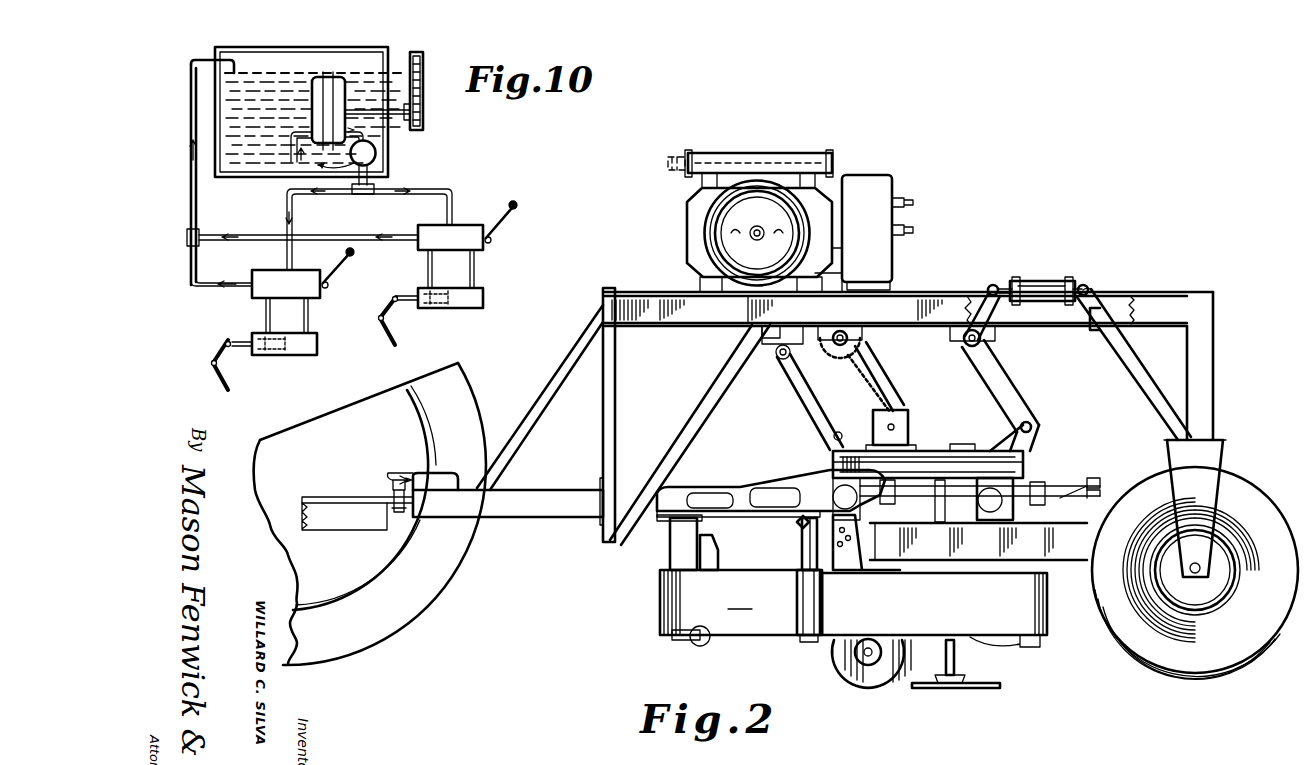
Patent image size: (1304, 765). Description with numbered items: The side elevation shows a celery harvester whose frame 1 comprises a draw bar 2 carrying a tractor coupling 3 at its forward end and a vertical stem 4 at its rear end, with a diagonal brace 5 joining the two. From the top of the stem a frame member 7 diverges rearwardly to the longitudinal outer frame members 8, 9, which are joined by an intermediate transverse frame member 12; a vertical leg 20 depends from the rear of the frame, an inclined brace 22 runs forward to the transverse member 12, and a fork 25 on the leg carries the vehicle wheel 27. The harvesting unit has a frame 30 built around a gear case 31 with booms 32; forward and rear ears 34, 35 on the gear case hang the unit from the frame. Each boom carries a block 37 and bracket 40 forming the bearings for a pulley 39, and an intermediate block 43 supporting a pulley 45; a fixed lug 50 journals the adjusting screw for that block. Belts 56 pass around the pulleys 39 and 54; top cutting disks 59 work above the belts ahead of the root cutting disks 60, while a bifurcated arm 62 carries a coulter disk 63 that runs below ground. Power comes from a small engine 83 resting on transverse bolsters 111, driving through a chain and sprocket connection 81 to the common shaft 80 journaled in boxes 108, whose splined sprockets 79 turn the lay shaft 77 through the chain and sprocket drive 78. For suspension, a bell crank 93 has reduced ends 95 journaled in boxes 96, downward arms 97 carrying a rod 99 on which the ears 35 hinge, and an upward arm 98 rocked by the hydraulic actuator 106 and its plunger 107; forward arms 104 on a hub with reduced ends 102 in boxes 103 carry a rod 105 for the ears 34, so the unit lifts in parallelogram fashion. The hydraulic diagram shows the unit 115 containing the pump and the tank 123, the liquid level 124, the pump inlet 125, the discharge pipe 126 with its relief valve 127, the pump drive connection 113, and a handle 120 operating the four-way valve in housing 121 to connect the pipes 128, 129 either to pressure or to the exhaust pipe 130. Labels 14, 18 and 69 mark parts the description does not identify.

In FIG. 2, the frame 1 is at (612, 288).
In FIG. 2, the draw bar 2 is at (542, 487).
In FIG. 2, the tractor coupling 3 is at (440, 477).
In FIG. 2, the vertical stem 4 is at (615, 418).
In FIG. 2, the diagonal brace 5 is at (535, 397).
In FIG. 2, the divergent frame member 7 is at (676, 323).
In FIG. 2, the outer frame member 8 is at (1106, 297).
In FIG. 2, the outer frame member 9 is at (916, 300).
In FIG. 2, the intermediate transverse frame member 12 is at (1088, 318).
In FIG. 2, the frame member 14 is at (1120, 300).
In FIG. 2, the diagonal brace 18 is at (690, 428).
In FIG. 2, the vertical leg 20 is at (1213, 392).
In FIG. 2, the inclined brace 22 is at (1135, 380).
In FIG. 2, the fork 25 is at (1213, 456).
In FIG. 2, the vehicle wheel 27 is at (1255, 490).
In FIG. 2, the frame of harvesting unit 30 is at (830, 462).
In FIG. 2, the gear case 31 is at (976, 450).
In FIG. 2, the boom 32 is at (752, 480).
In FIG. 2, the forward ears 34 is at (838, 448).
In FIG. 2, the rear ears 35 is at (1030, 438).
In FIG. 2, the block 37 is at (678, 548).
In FIG. 2, the pulley 39 is at (668, 564).
In FIG. 2, the bracket 40 is at (712, 550).
In FIG. 2, the block 43 is at (802, 548).
In FIG. 2, the pulley 45 is at (800, 632).
In FIG. 2, the fixed lug 50 is at (797, 524).
In FIG. 2, the pulley 54 is at (1041, 645).
In FIG. 2, the belt 56 is at (873, 579).
In FIG. 2, the top cutting disk 59 is at (868, 560).
In FIG. 2, the root cutting disk 60 is at (985, 688).
In FIG. 2, the bifurcated arm 62 is at (869, 640).
In FIG. 2, the coulter disk 63 is at (835, 656).
In FIG. 2, the post 69 is at (955, 660).
In FIG. 2, the lay shaft 77 is at (895, 427).
In FIG. 2, the chain and sprocket drive 78 is at (878, 374).
In FIG. 2, the sprocket 79 is at (833, 358).
In FIG. 2, the common drive shaft 80 is at (840, 330).
In FIG. 2, the chain and sprocket connection 81 is at (820, 348).
In FIG. 2, the small engine 83 is at (696, 210).
In FIG. 2, the bell crank 93 is at (962, 342).
In FIG. 10, the reduced ends 95 is at (210, 362).
In FIG. 2, the reduced ends 95 is at (970, 348).
In FIG. 2, the boxes 96 is at (990, 333).
In FIG. 10, the downward arms 97 is at (222, 382).
In FIG. 2, the downward arms 97 is at (995, 378).
In FIG. 10, the upward arm 98 is at (226, 342).
In FIG. 2, the upward arm 98 is at (988, 290).
In FIG. 2, the rod 99 is at (1032, 422).
In FIG. 2, the reduced ends 102 is at (780, 358).
In FIG. 2, the boxes 103 is at (768, 345).
In FIG. 2, the arms 104 is at (812, 402).
In FIG. 2, the transverse rod 105 is at (768, 328).
In FIG. 10, the actuator 106 is at (318, 345).
In FIG. 2, the actuator 106 is at (1033, 280).
In FIG. 2, the actuator plunger 107 is at (1090, 284).
In FIG. 2, the boxes 108 is at (862, 330).
In FIG. 2, the transverse bolsters 111 is at (706, 290).
In FIG. 10, the chain and sprocket connection 113 is at (424, 108).
In FIG. 2, the pump and tank unit 115 is at (882, 215).
In FIG. 10, the manual control handle 120 is at (340, 262).
In FIG. 10, the valve housing 121 is at (272, 271).
In FIG. 10, the tank 123 is at (310, 55).
In FIG. 10, the liquid level line 124 is at (294, 76).
In FIG. 10, the pump inlet 125 is at (333, 74).
In FIG. 10, the discharge pipe 126 is at (375, 170).
In FIG. 10, the relief valve 127 is at (377, 152).
In FIG. 10, the pipe 128 is at (308, 324).
In FIG. 10, the pipe 129 is at (266, 324).
In FIG. 10, the exhaust pipe 130 is at (191, 216).